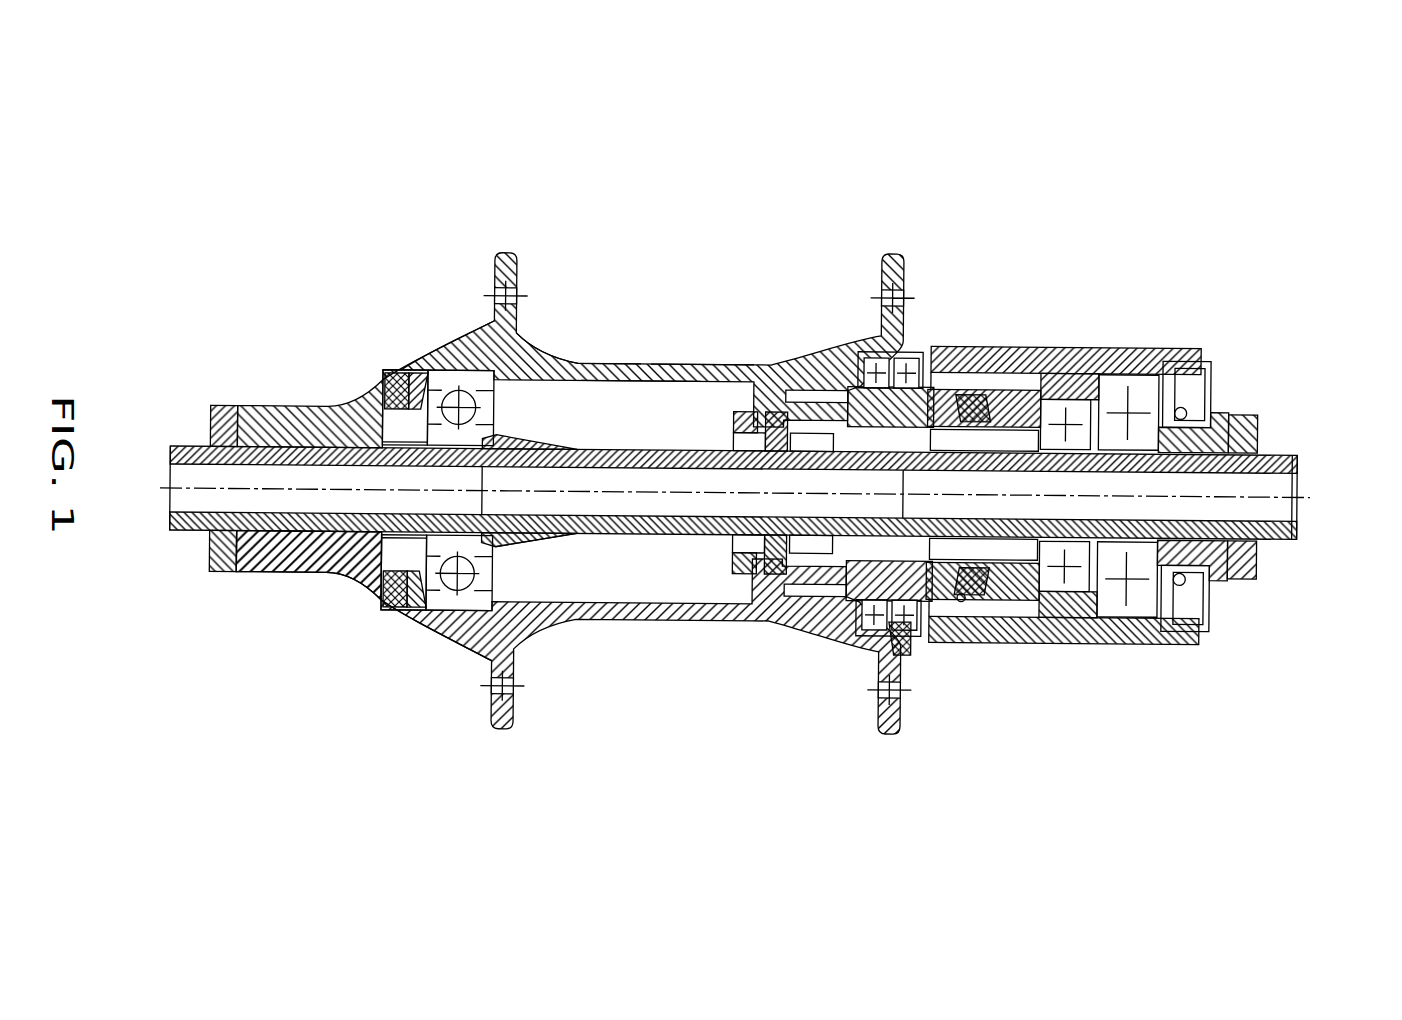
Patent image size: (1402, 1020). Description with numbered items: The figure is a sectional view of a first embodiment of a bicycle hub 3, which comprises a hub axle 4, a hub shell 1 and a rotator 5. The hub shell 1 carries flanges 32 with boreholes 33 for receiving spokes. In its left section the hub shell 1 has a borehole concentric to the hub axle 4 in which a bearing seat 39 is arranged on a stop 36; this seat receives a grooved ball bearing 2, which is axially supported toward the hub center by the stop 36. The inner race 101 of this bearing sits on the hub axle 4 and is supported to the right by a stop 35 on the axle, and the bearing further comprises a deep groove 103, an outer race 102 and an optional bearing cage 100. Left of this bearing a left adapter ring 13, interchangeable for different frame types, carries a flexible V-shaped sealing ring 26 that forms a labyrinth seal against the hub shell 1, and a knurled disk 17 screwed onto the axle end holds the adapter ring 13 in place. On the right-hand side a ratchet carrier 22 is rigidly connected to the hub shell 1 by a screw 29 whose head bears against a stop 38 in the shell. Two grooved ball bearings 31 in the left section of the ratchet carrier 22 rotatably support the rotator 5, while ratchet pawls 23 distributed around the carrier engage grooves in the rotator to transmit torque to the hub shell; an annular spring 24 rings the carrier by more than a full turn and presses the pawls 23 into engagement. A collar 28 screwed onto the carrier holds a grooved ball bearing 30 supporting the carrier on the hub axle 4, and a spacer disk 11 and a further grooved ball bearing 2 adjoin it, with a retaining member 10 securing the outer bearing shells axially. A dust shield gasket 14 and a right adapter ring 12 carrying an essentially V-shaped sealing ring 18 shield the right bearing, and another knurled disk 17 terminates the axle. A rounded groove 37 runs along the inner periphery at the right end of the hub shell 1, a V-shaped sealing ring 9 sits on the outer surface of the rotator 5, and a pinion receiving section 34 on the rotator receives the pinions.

The hub shell 1 is at (700, 358).
The grooved ball bearing 2 is at (1133, 400).
The hub 3 is at (260, 617).
The hub axle 4 is at (612, 580).
The rotator 5 is at (1100, 343).
The V-shaped sealing ring 9 is at (903, 660).
The retaining member 10 is at (1205, 345).
The spacer disk 11 is at (1145, 640).
The right adapter ring 12 is at (1245, 412).
The left adapter ring 13 is at (312, 400).
The dust shield gasket 14 is at (1190, 640).
The knurled disk 17 is at (228, 400).
The V-shaped sealing ring 18 is at (1180, 413).
The ratchet carrier 22 is at (810, 615).
The ratchet pawls 23 is at (1000, 400).
The annular spring 24 is at (962, 605).
The V-shaped sealing ring 26 is at (330, 625).
The collar 28 is at (1022, 640).
The screw 29 is at (770, 385).
The grooved ball bearing 30 is at (1095, 640).
The grooved ball bearings 31 is at (875, 360).
The flanges 32 is at (503, 250).
The boreholes 33 is at (410, 365).
The pinion receiving section 34 is at (1220, 640).
The stop 35 is at (555, 575).
The stop 36 is at (558, 358).
The groove 37 is at (860, 340).
The stop 38 is at (738, 570).
The bearing seat 39 is at (400, 620).
The bearing cage 100 is at (548, 625).
The inner race 101 is at (600, 380).
The outer race 102 is at (600, 355).
The deep groove 103 is at (410, 350).